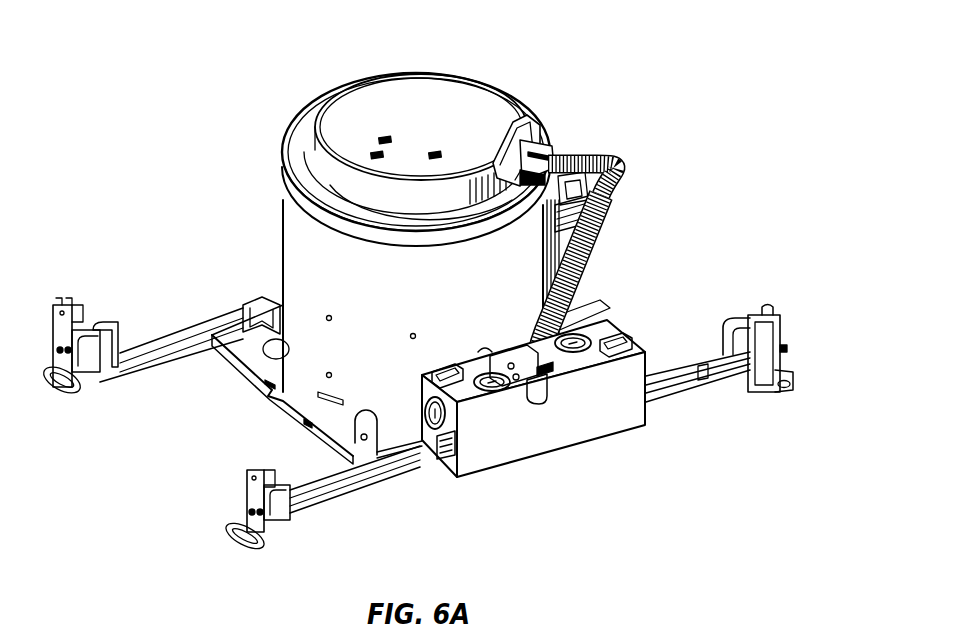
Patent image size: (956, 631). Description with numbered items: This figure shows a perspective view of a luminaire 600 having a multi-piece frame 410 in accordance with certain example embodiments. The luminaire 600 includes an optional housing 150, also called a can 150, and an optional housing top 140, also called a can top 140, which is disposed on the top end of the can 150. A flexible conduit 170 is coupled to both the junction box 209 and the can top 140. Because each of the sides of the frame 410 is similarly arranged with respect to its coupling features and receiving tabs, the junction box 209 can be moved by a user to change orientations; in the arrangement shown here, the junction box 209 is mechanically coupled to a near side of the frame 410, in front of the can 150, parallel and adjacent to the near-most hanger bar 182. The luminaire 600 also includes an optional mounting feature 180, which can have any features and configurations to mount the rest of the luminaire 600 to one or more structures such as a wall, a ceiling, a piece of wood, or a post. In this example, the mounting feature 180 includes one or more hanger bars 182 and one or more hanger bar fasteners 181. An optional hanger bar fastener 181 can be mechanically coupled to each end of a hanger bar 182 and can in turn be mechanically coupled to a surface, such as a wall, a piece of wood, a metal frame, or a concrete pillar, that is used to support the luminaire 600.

The luminaire 600 is at (693, 50).
The housing top 140 is at (458, 79).
The housing 150 is at (283, 227).
The flexible conduit 170 is at (632, 187).
The junction box 209 is at (647, 321).
The multi-piece frame 410 is at (259, 411).
The mounting feature 180 is at (707, 397).
The hanger bar fastener 181 is at (265, 548).
The hanger bar 182 is at (343, 495).